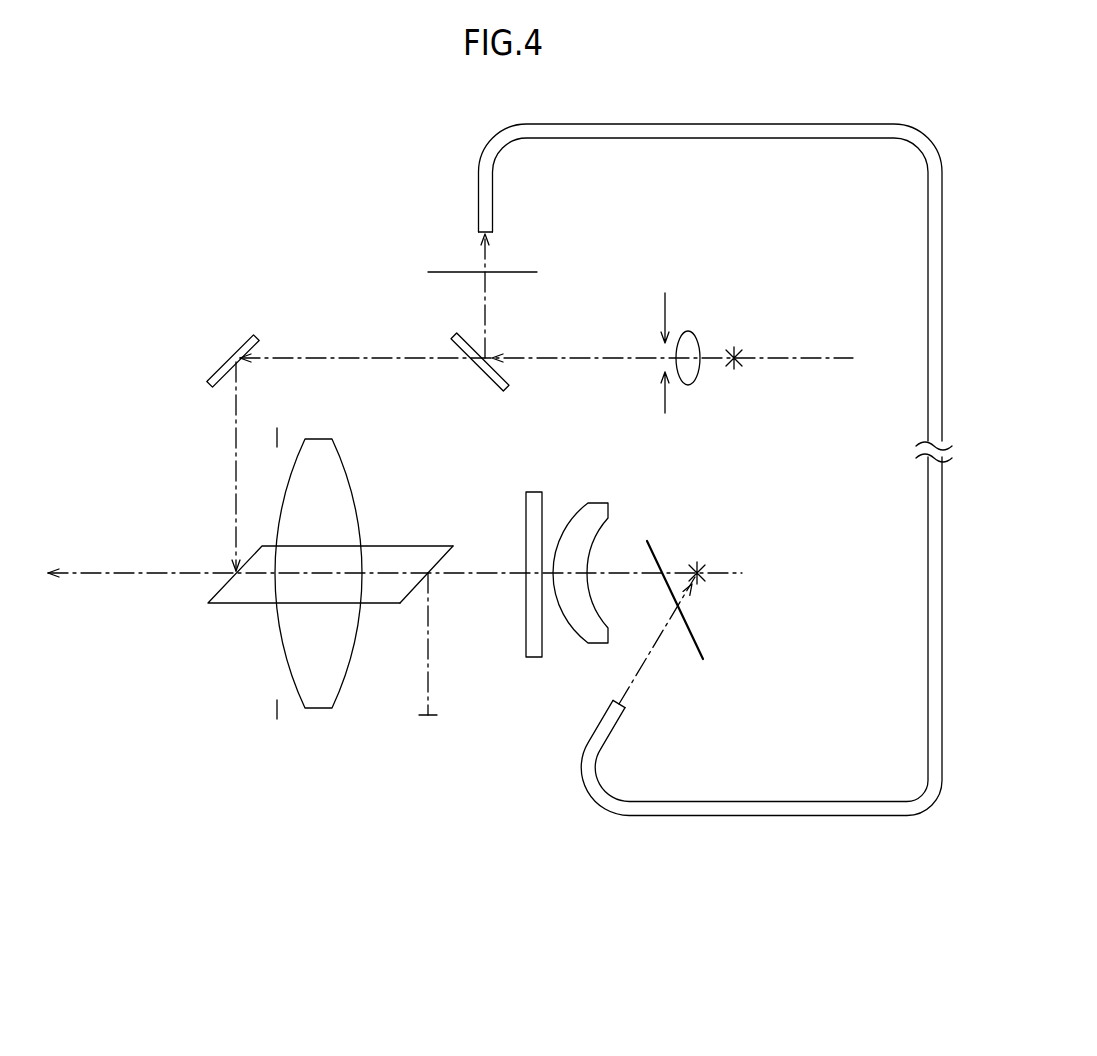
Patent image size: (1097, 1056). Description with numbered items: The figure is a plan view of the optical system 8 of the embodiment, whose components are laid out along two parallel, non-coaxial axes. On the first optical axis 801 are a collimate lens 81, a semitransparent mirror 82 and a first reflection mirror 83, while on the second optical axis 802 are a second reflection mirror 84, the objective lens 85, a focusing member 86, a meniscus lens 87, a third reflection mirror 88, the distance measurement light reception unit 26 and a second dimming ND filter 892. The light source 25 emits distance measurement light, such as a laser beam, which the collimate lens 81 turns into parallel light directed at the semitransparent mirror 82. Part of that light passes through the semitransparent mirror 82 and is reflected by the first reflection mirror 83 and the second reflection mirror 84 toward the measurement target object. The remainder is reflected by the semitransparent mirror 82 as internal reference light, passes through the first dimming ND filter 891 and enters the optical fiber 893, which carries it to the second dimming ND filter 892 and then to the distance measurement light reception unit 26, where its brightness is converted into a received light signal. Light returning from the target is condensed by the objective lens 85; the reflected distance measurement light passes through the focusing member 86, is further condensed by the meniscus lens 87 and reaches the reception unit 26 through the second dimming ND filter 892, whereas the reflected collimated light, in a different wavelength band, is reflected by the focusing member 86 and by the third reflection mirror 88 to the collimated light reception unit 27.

The optical system 8 is at (285, 226).
The light source 25 is at (738, 354).
The distance measurement light reception unit 26 is at (704, 565).
The collimated light reception unit 27 is at (433, 717).
The collimate lens 81 is at (690, 333).
The semitransparent mirror 82 is at (476, 392).
The first reflection mirror 83 is at (203, 383).
The second reflection mirror 84 is at (216, 596).
The objective lens 85 is at (327, 713).
The focusing member 86 is at (536, 492).
The meniscus lens 87 is at (600, 508).
The third reflection mirror 88 is at (462, 549).
The first optical axis 801 is at (348, 357).
The second optical axis 802 is at (99, 577).
The first dimming ND filter 891 is at (522, 272).
The second dimming ND filter 892 is at (650, 544).
The optical fiber 893 is at (740, 817).